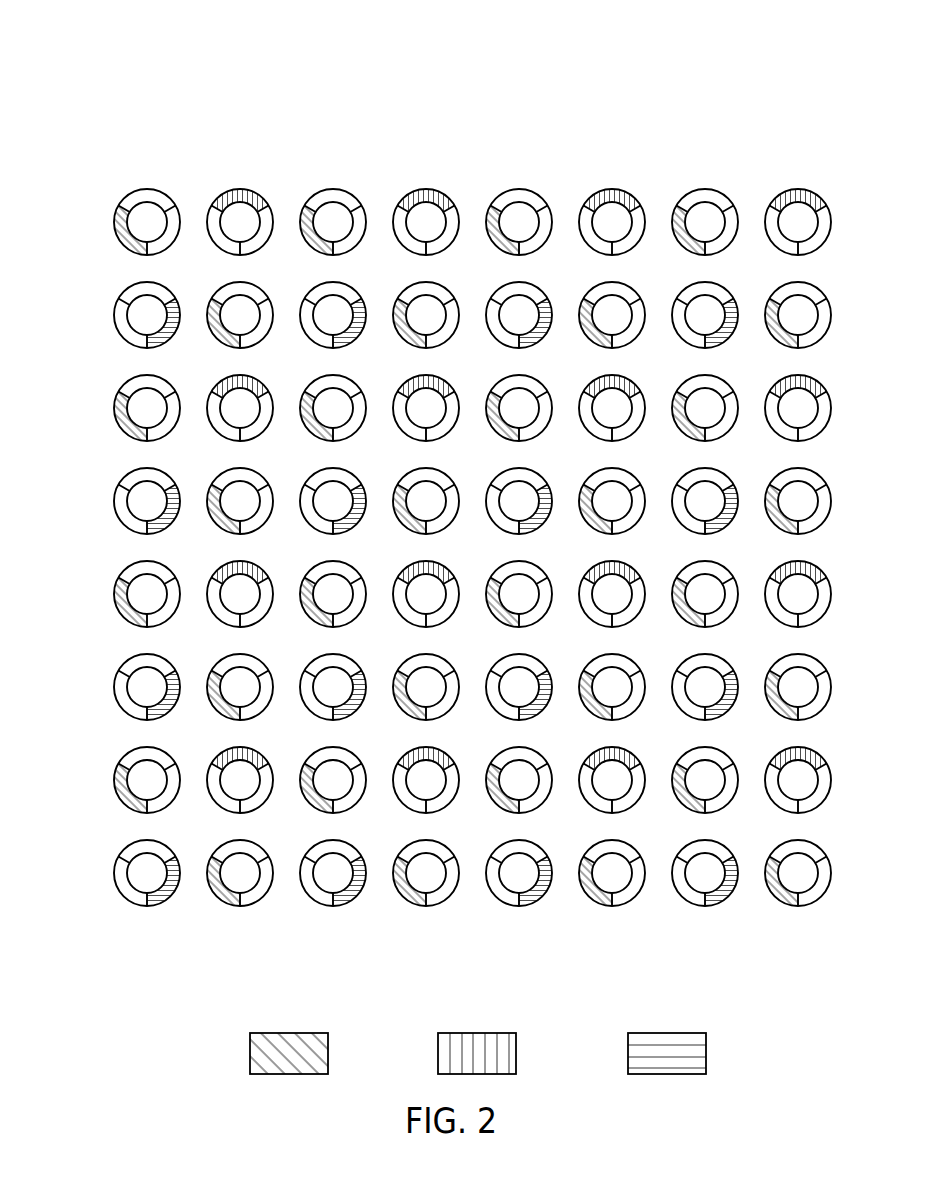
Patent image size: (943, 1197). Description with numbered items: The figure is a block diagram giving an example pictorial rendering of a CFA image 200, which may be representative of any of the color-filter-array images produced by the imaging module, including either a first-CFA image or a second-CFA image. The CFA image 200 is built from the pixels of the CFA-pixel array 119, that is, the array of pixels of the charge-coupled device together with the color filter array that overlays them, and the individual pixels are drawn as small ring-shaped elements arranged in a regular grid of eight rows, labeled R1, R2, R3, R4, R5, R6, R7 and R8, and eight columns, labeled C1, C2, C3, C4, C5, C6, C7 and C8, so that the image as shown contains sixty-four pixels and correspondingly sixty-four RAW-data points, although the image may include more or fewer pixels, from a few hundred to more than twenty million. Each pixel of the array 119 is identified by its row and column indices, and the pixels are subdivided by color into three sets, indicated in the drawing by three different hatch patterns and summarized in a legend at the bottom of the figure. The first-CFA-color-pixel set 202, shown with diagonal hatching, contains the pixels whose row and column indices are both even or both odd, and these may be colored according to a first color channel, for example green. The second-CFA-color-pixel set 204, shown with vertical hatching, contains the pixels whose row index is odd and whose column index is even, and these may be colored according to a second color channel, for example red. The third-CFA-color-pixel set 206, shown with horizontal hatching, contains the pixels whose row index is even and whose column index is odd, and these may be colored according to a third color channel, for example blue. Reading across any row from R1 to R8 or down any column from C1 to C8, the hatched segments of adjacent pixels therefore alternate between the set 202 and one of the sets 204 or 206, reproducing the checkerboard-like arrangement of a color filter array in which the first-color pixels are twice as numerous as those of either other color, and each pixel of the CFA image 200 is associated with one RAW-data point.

The CFA image 200 is at (375, 37).
The CFA-pixel array 119 is at (758, 952).
The first-CFA-color-pixel set 202 is at (250, 1041).
The second-CFA-color-pixel set 204 is at (438, 1041).
The third-CFA-color-pixel set 206 is at (628, 1041).
The row 1 R1 is at (438, 216).
The row 2 R2 is at (438, 309).
The row 3 R3 is at (438, 402).
The row 4 R4 is at (438, 495).
The row 5 R5 is at (438, 588).
The row 6 R6 is at (438, 681).
The row 7 R7 is at (438, 774).
The row 8 R8 is at (438, 885).
The column 1 C1 is at (147, 891).
The column 2 C2 is at (240, 891).
The column 3 C3 is at (333, 891).
The column 4 C4 is at (426, 891).
The column 5 C5 is at (519, 891).
The column 6 C6 is at (612, 891).
The column 7 C7 is at (705, 891).
The column 8 C8 is at (798, 891).